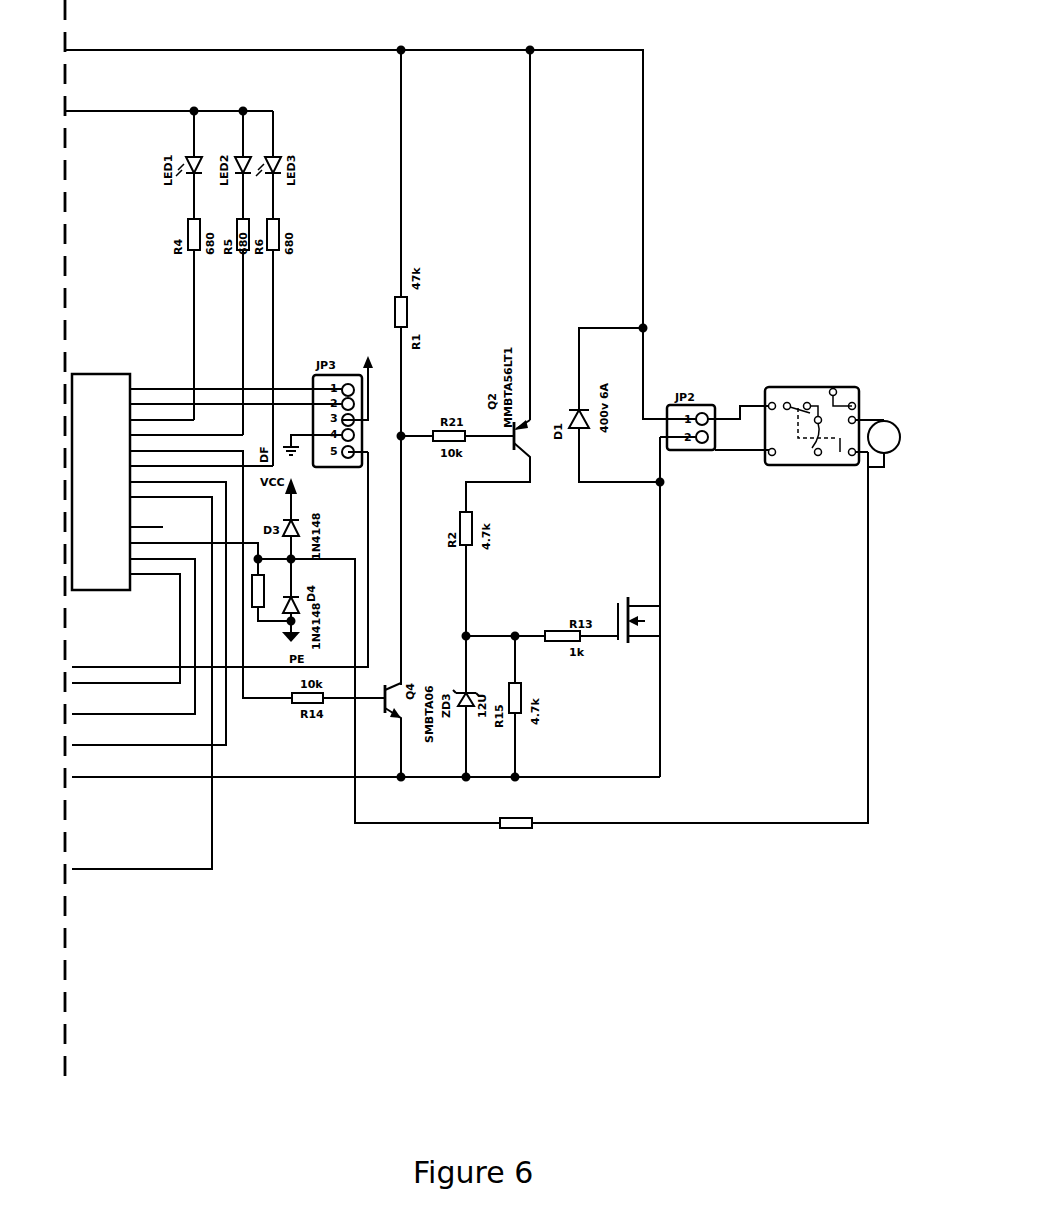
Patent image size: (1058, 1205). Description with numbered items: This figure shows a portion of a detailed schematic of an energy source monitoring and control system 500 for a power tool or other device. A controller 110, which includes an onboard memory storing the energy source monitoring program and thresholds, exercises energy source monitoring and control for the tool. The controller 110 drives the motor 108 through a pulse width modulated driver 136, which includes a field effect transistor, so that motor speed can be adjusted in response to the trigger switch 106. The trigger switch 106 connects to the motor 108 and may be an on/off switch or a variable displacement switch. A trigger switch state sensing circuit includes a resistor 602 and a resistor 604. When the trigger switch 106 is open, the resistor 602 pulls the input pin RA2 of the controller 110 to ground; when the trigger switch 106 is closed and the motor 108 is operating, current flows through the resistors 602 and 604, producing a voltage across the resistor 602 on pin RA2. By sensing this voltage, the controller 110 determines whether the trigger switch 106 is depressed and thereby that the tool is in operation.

The energy source monitoring and control system 500 is at (104, 1089).
The controller 110 is at (104, 373).
The resistor 602 is at (254, 600).
The resistor 604 is at (500, 831).
The pulse width modulated driver 136 is at (739, 405).
The trigger switch 106 is at (800, 402).
The motor 108 is at (899, 432).